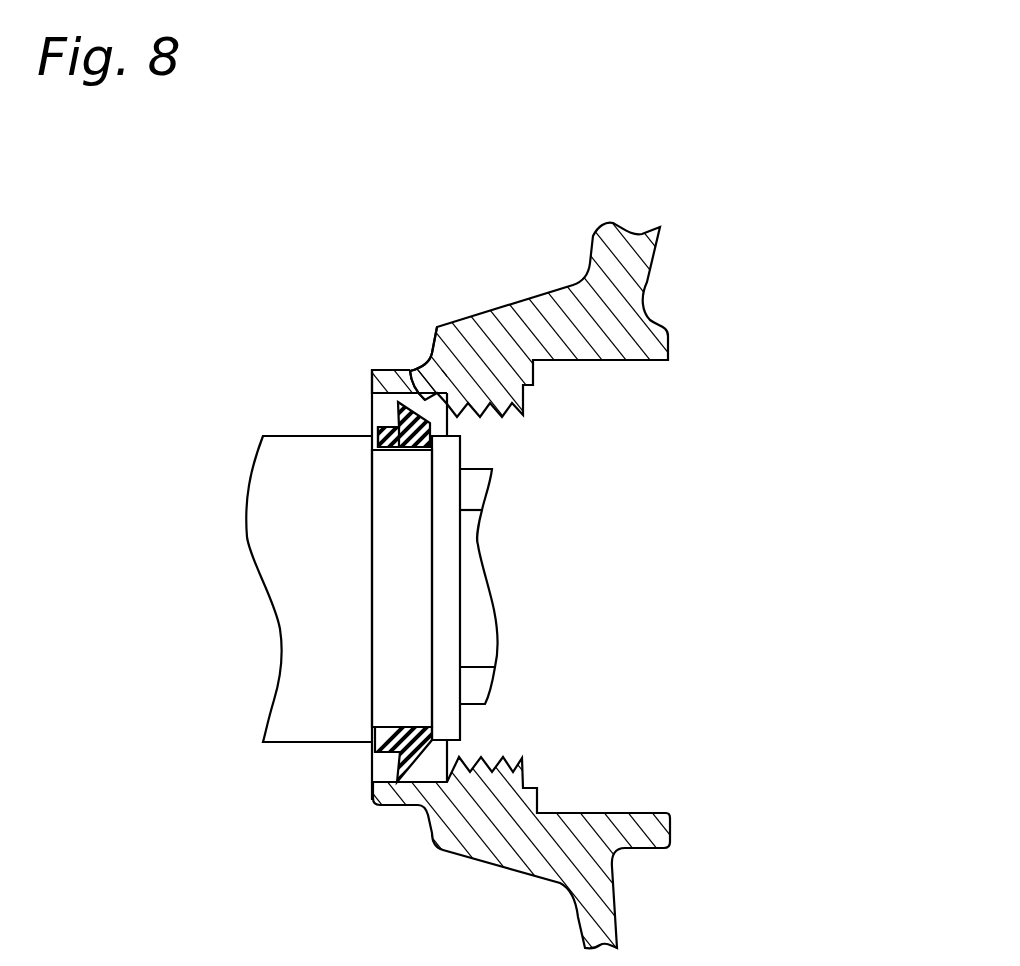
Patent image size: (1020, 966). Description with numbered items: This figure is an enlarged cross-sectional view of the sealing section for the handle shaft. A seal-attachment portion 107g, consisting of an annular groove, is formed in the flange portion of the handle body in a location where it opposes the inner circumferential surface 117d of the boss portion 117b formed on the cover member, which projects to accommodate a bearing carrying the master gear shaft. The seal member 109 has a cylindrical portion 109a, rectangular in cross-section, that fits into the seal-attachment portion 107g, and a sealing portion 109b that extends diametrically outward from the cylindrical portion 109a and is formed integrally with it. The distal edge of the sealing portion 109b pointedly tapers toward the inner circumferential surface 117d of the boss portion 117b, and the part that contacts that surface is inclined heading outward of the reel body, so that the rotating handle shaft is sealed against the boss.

The boss portion 117b is at (612, 296).
The inner circumferential surface 117d is at (432, 398).
The seal member 109 is at (430, 440).
The cylindrical portion 109a is at (378, 428).
The sealing portion 109b is at (372, 386).
The seal-attachment portion 107g is at (418, 572).